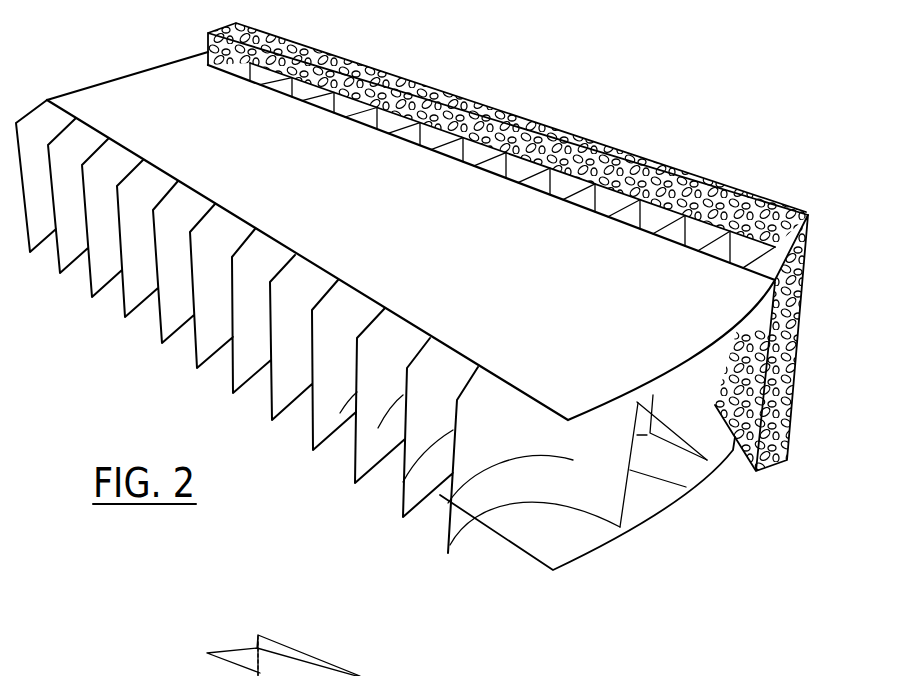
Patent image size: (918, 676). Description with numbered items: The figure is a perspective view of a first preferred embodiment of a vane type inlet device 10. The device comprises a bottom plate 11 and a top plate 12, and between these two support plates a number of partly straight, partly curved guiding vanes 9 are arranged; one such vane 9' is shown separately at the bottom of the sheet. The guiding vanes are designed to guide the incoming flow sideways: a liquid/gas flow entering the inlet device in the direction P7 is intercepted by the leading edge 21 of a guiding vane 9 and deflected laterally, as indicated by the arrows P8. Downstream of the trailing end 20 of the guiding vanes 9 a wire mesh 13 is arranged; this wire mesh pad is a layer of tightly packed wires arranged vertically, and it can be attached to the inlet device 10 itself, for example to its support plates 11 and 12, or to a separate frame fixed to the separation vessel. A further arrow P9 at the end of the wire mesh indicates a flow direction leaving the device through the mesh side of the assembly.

The top plate 12 is at (132, 87).
The wire mesh 13 is at (600, 152).
The guiding vanes 9 is at (361, 363).
The fin 9' is at (329, 655).
The trailing end 20 is at (461, 525).
The leading edge 21 is at (697, 492).
The bottom plate 11 is at (655, 518).
The vane type inlet device 10 is at (619, 568).
The entering liquid/gas flow P7 is at (773, 490).
The laterally deflected flow P8 is at (362, 418).
The side flow direction P9 is at (807, 282).